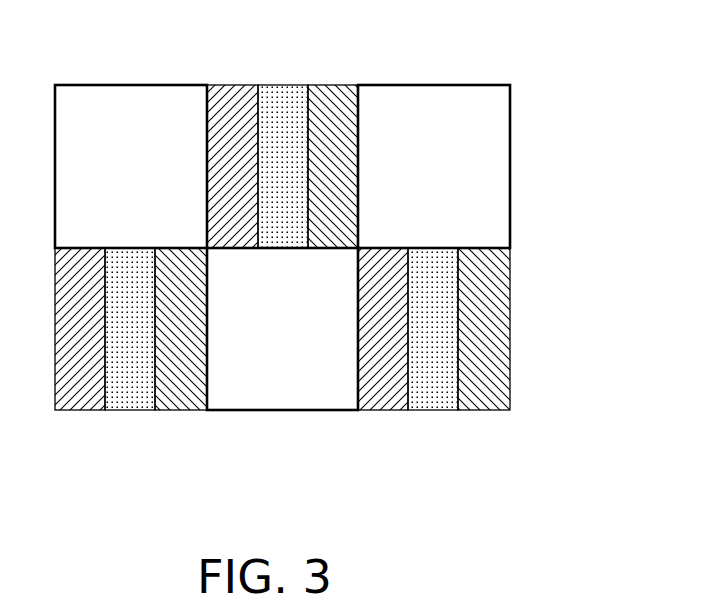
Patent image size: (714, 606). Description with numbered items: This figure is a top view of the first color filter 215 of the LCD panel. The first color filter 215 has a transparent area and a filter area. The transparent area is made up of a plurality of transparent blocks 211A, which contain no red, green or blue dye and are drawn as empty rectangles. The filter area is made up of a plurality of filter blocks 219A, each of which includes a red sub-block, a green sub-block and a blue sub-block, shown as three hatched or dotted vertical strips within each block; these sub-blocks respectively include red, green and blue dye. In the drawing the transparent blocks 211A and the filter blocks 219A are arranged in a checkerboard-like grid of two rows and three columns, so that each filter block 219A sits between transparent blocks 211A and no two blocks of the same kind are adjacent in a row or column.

The transparent block 211A is at (283, 433).
The filter block 219A is at (283, 249).
The first color filter 215 is at (346, 249).